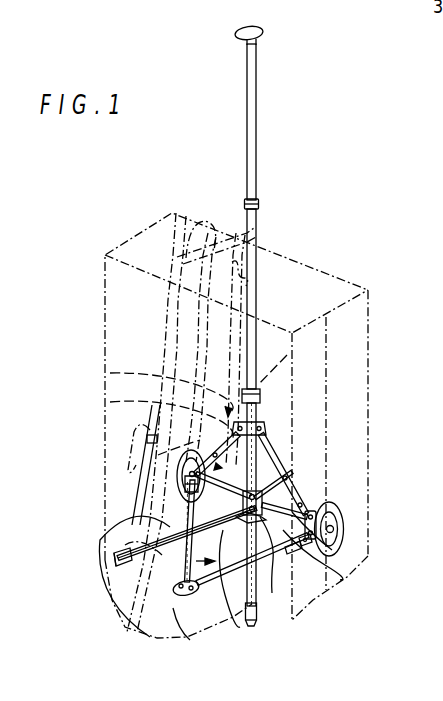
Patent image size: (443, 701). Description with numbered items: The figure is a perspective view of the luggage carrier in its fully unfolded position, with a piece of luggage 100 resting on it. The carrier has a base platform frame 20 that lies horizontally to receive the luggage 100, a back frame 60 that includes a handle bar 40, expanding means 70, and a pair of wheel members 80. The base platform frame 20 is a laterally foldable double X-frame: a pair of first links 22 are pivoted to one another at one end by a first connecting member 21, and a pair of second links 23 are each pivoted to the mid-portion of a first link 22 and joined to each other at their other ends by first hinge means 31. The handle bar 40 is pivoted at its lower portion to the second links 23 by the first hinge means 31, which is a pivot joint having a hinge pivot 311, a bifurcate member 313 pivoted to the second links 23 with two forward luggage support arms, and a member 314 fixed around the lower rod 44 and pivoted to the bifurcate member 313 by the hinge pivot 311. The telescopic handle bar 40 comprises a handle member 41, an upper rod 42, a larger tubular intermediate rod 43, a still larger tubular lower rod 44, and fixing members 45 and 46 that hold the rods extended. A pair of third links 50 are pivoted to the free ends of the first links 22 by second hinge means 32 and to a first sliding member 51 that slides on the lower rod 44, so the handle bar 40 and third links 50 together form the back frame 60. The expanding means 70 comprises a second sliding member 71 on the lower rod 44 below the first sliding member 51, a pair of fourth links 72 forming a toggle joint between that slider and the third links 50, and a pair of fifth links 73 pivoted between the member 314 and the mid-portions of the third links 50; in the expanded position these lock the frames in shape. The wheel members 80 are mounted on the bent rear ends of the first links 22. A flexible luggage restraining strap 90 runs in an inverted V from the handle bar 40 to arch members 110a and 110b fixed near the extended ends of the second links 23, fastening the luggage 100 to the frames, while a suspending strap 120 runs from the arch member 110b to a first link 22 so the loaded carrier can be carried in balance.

The base platform frame 20 is at (150, 592).
The first connecting member 21 is at (190, 596).
The first links 22 is at (150, 565).
The second links 23 is at (118, 560).
The first hinge means 31 is at (292, 578).
The second hinge means 32 is at (312, 565).
The handle bar 40 is at (247, 213).
The handle member 41 is at (261, 33).
The upper rod 42 is at (257, 112).
The intermediate rod 43 is at (256, 221).
The lower rod 44 is at (267, 429).
The fixing member 45 is at (246, 204).
The fixing member 46 is at (285, 355).
The third links 50 is at (110, 402).
The first sliding member 51 is at (260, 410).
The back frame 60 is at (110, 373).
The expanding means 70 is at (135, 455).
The second sliding member 71 is at (282, 456).
The fourth links 72 is at (300, 492).
The fifth links 73 is at (140, 428).
The wheel members 80 is at (352, 526).
The luggage restraining strap 90 is at (176, 213).
The luggage 100 is at (292, 263).
The arch member 110a is at (140, 556).
The arch member 110b is at (265, 620).
The suspending strap 120 is at (160, 280).
The hinge pivot 311 is at (292, 596).
The bifurcate member 313 is at (242, 612).
The member 314 is at (128, 540).